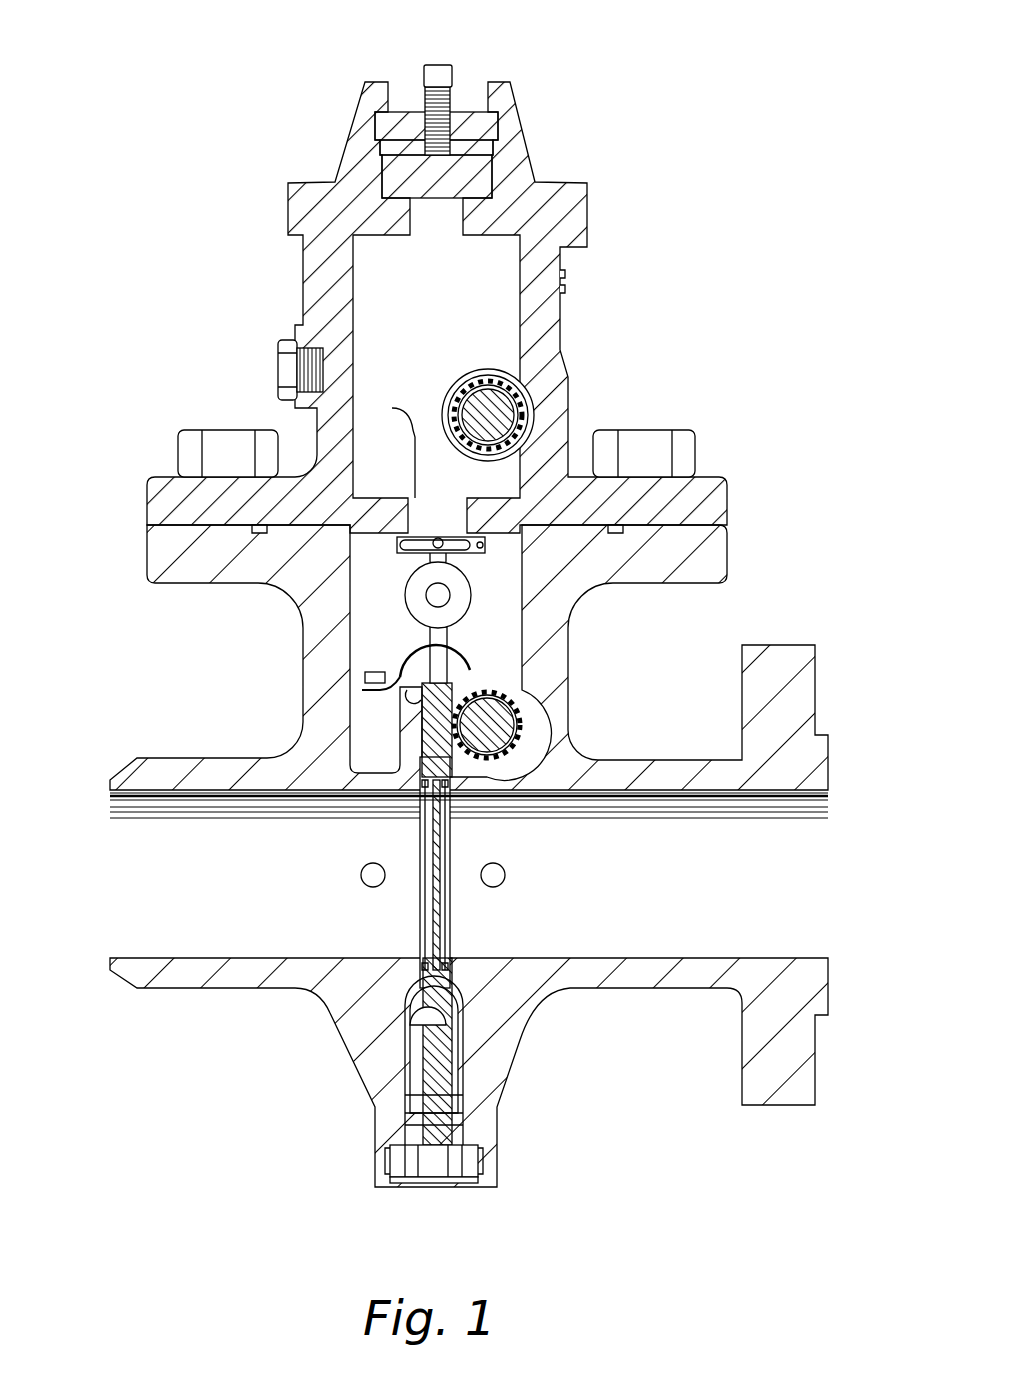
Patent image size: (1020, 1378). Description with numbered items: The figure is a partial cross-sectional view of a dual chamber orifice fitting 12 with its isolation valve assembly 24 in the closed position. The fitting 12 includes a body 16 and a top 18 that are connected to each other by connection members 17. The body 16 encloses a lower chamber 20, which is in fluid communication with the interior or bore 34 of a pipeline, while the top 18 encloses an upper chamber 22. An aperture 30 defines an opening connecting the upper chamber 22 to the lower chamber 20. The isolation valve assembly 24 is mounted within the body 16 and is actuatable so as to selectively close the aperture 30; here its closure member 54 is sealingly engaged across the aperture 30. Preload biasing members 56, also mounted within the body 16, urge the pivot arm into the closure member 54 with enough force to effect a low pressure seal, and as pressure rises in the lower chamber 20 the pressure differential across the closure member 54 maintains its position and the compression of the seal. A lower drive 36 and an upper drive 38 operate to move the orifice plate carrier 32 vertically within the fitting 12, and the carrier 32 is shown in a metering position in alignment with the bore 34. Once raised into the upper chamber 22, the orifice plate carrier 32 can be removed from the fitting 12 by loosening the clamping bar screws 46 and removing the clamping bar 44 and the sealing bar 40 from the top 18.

The dual chamber orifice fitting 12 is at (122, 394).
The body 16 is at (206, 992).
The connection members 17 is at (687, 450).
The top 18 is at (553, 318).
The lower chamber 20 is at (497, 665).
The upper chamber 22 is at (418, 317).
The isolation valve assembly 24 is at (488, 623).
The aperture 30 is at (415, 520).
The orifice plate carrier 32 is at (427, 750).
The bore 34 is at (615, 892).
The lower drive 36 is at (493, 717).
The upper drive 38 is at (515, 397).
The sealing bar 40 is at (477, 168).
The clamping bar 44 is at (487, 122).
The clamping bar screws 46 is at (441, 62).
The closure member 54 is at (405, 555).
The preload biasing members 56 is at (423, 653).